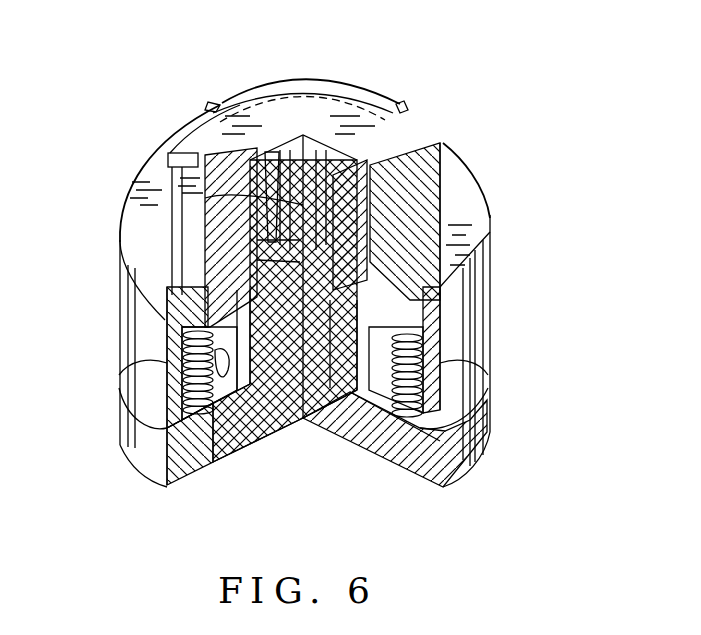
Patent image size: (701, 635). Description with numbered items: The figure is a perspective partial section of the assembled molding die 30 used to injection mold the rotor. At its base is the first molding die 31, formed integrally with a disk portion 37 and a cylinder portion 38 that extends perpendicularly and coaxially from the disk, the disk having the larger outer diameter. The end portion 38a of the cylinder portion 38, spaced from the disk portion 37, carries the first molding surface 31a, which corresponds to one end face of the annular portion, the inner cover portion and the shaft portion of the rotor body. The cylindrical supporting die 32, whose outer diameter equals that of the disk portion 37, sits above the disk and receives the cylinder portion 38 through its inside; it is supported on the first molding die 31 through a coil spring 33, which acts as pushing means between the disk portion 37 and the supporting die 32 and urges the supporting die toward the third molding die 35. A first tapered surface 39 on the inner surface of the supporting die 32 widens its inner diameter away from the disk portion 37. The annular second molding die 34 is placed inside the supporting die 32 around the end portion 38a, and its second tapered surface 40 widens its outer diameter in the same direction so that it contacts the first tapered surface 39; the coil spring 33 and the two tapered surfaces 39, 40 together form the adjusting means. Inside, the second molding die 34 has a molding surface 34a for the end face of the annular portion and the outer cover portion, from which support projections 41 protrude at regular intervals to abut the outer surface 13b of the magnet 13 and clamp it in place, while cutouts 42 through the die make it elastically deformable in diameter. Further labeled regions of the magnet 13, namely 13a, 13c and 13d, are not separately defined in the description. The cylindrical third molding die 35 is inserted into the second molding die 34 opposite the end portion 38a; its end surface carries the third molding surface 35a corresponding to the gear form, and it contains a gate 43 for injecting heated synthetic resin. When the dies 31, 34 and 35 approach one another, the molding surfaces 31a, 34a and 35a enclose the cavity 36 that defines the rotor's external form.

The magnet 13 is at (273, 400).
The plunger tip portion 13a is at (262, 430).
The outer surface of the magnet 13b is at (162, 318).
The plunger lower portion 13c is at (230, 455).
The plunger flange 13d is at (225, 225).
The molding die 30 is at (500, 166).
The first molding die 31 is at (489, 403).
The first molding surface 31a is at (317, 400).
The supporting die 32 is at (490, 290).
The coil spring 33 is at (490, 372).
The second molding die 34 is at (440, 207).
The molding surface 34a is at (200, 265).
The third molding die 35 is at (383, 92).
The third molding surface 35a is at (310, 160).
The cavity 36 is at (255, 225).
The disk portion 37 is at (407, 458).
The cylinder portion 38 is at (355, 420).
The end portion 38a is at (443, 143).
The first tapered surface 39 is at (205, 455).
The second tapered surface 40 is at (205, 198).
The support projections 41 is at (160, 348).
The cutouts 42 is at (205, 108).
The gate 43 is at (272, 160).